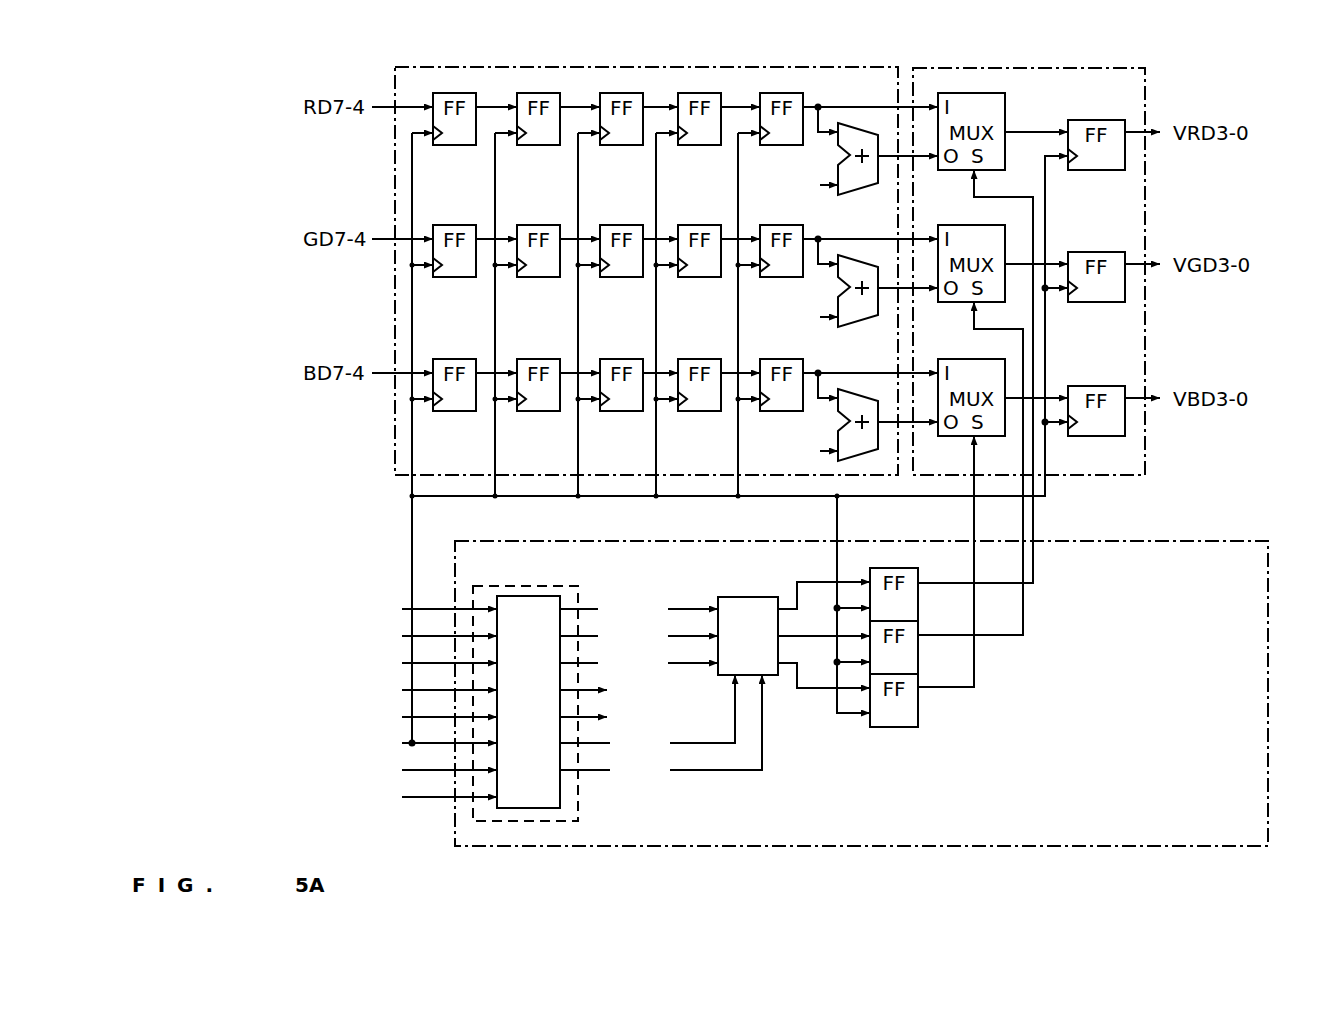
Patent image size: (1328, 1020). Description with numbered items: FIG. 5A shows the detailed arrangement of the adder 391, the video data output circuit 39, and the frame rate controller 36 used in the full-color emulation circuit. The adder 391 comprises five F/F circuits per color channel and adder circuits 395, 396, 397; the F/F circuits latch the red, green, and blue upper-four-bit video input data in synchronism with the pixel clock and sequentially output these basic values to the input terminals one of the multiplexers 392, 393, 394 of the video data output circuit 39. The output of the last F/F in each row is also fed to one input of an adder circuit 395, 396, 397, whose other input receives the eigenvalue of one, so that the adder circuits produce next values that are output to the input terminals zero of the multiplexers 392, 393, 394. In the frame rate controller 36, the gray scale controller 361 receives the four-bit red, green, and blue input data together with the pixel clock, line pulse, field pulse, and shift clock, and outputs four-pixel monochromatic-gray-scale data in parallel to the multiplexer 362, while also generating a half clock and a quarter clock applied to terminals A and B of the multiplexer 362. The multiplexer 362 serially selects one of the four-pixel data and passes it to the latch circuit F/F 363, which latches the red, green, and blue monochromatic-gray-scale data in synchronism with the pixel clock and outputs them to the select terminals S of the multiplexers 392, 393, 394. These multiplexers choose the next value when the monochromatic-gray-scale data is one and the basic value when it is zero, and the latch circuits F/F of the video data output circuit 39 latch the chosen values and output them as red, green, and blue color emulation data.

The adder 391 is at (570, 67).
The video data output circuit 39 is at (925, 68).
The multiplexer 392 is at (1005, 100).
The multiplexer 393 is at (958, 225).
The multiplexer 394 is at (958, 359).
The adder circuit 395 is at (855, 195).
The adder circuit 396 is at (855, 327).
The adder circuit 397 is at (838, 438).
The frame rate controller 36 is at (800, 846).
The gray scale controller 361 is at (580, 793).
The multiplexer 362 is at (745, 597).
The latch circuit F/F 363 is at (893, 728).